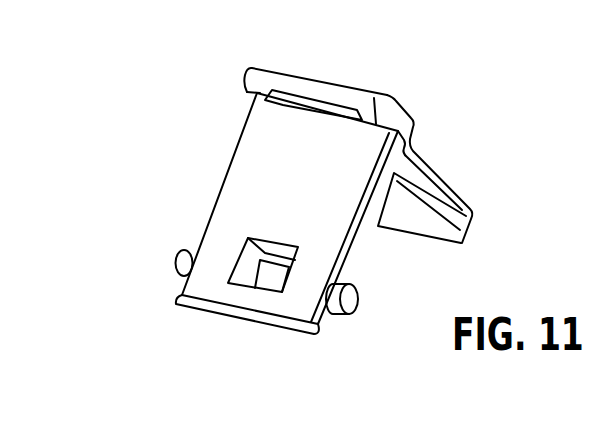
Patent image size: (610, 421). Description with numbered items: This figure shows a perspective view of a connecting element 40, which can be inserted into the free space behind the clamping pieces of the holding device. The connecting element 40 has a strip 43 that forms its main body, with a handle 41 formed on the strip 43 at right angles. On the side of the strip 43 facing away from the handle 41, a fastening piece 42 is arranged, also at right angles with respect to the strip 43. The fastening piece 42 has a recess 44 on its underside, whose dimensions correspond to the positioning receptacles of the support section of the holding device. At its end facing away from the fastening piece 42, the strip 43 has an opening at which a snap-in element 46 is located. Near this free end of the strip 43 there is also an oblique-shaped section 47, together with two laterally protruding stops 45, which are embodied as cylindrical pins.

The connecting element 40 is at (468, 166).
The handle 41 is at (473, 225).
The fastening piece 42 is at (243, 80).
The strip 43 is at (227, 206).
The recess 44 is at (252, 112).
The stops 45 is at (178, 263).
The snap-in element 46 is at (268, 273).
The oblique-shaped section 47 is at (326, 328).